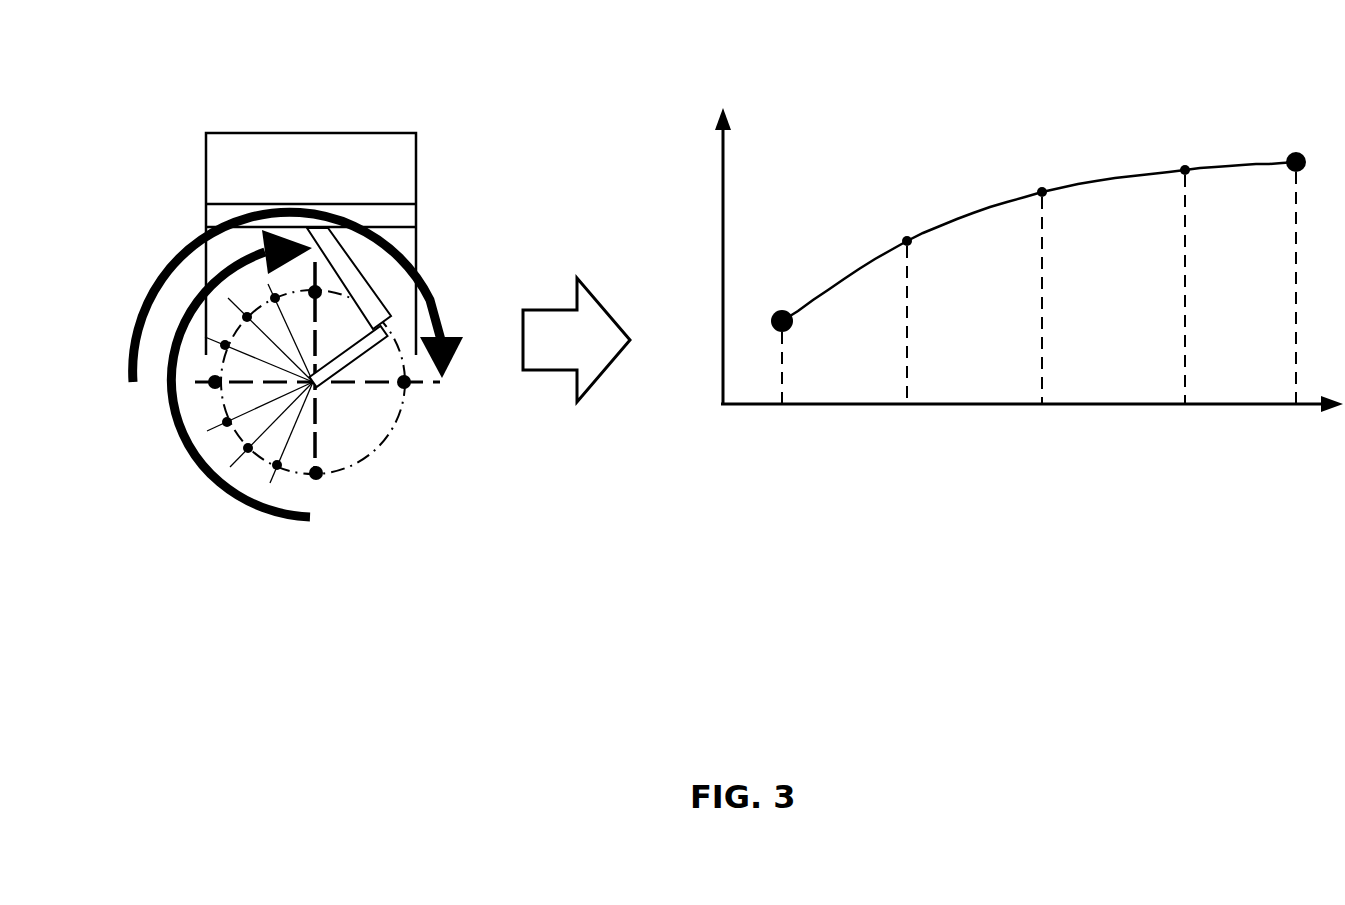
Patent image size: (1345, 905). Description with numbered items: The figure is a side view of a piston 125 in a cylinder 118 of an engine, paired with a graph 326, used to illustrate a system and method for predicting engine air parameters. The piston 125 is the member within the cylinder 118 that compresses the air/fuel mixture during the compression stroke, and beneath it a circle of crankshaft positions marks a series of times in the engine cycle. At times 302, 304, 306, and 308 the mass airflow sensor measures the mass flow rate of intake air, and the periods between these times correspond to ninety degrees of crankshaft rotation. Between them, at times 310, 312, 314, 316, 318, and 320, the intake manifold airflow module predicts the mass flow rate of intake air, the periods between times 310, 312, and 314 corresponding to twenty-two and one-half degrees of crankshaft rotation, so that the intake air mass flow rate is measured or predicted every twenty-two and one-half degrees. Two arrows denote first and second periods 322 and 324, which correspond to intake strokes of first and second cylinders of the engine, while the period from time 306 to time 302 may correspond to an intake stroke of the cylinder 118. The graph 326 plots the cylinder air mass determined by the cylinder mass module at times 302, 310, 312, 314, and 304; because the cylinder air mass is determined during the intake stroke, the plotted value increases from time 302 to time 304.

The cylinder 118 is at (206, 166).
The piston 125 is at (388, 203).
The time 302 is at (550, 410).
The time 304 is at (745, 292).
The time 306 is at (372, 326).
The time 308 is at (423, 395).
The time 310 is at (580, 366).
The time 312 is at (631, 327).
The time 314 is at (693, 299).
The time 316 is at (213, 331).
The time 318 is at (241, 300).
The time 320 is at (290, 287).
The first period 322 is at (197, 460).
The second period 324 is at (172, 263).
The graph 326 is at (774, 51).